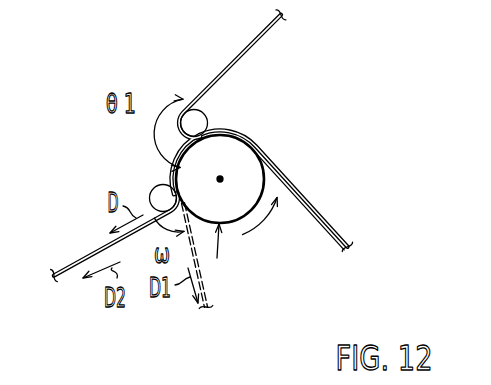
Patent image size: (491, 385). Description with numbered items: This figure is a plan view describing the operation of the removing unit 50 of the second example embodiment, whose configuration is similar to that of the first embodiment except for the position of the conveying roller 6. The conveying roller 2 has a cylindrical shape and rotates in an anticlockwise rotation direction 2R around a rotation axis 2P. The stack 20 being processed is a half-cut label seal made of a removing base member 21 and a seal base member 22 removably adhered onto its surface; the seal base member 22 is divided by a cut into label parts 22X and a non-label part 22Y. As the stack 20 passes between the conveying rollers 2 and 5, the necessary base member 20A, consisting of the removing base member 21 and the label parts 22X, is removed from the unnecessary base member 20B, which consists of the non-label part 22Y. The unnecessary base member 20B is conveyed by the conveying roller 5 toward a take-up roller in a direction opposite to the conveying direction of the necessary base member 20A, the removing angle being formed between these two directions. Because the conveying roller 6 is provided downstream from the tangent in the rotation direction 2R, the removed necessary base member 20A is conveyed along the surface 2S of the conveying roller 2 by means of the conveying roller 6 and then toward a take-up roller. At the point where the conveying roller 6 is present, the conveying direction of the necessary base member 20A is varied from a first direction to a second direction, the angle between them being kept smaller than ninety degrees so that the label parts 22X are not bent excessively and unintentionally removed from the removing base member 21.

The conveying roller 2 is at (246, 163).
The rotation axis 2P is at (235, 188).
The rotation direction 2R is at (262, 227).
The surface of the conveying roller 2S is at (225, 252).
The conveying roller 5 is at (198, 119).
The conveying roller 6 is at (152, 193).
The stack 20 is at (390, 141).
The necessary base member 20A is at (72, 263).
The unnecessary base member 20B is at (231, 61).
The removing base member 21 is at (323, 210).
The seal base member 22 is at (308, 190).
The label part 22X is at (112, 243).
The non-label part 22Y is at (232, 64).
The removing unit 50 is at (385, 65).